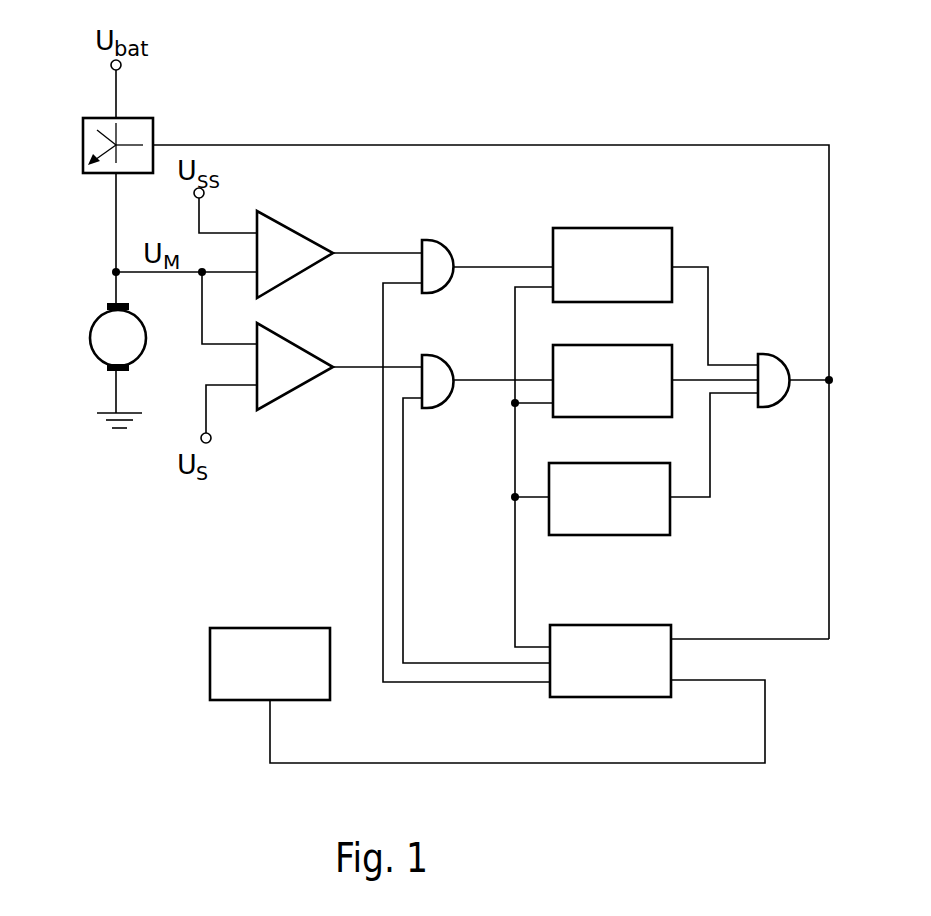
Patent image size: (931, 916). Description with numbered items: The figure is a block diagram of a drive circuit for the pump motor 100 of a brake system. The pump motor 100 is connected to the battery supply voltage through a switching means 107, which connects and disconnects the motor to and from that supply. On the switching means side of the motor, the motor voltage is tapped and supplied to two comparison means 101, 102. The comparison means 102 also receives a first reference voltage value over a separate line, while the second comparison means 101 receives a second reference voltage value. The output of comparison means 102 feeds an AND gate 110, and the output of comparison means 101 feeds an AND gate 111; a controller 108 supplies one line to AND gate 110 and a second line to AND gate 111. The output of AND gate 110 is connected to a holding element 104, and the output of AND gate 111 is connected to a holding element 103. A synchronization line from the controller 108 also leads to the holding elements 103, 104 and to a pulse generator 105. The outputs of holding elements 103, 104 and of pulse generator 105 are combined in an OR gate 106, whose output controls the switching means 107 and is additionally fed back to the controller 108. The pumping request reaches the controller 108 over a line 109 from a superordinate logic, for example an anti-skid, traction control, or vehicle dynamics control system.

The pump motor 100 is at (108, 348).
The second comparison means 101 is at (283, 383).
The comparison means 102 is at (293, 248).
The holding element 103 is at (590, 399).
The holding element 104 is at (590, 283).
The pulse generator 105 is at (588, 521).
The OR gate 106 is at (767, 358).
The switching means 107 is at (100, 173).
The controller 108 is at (590, 677).
The line 109 is at (244, 678).
The AND gate 110 is at (433, 258).
The AND gate 111 is at (437, 370).